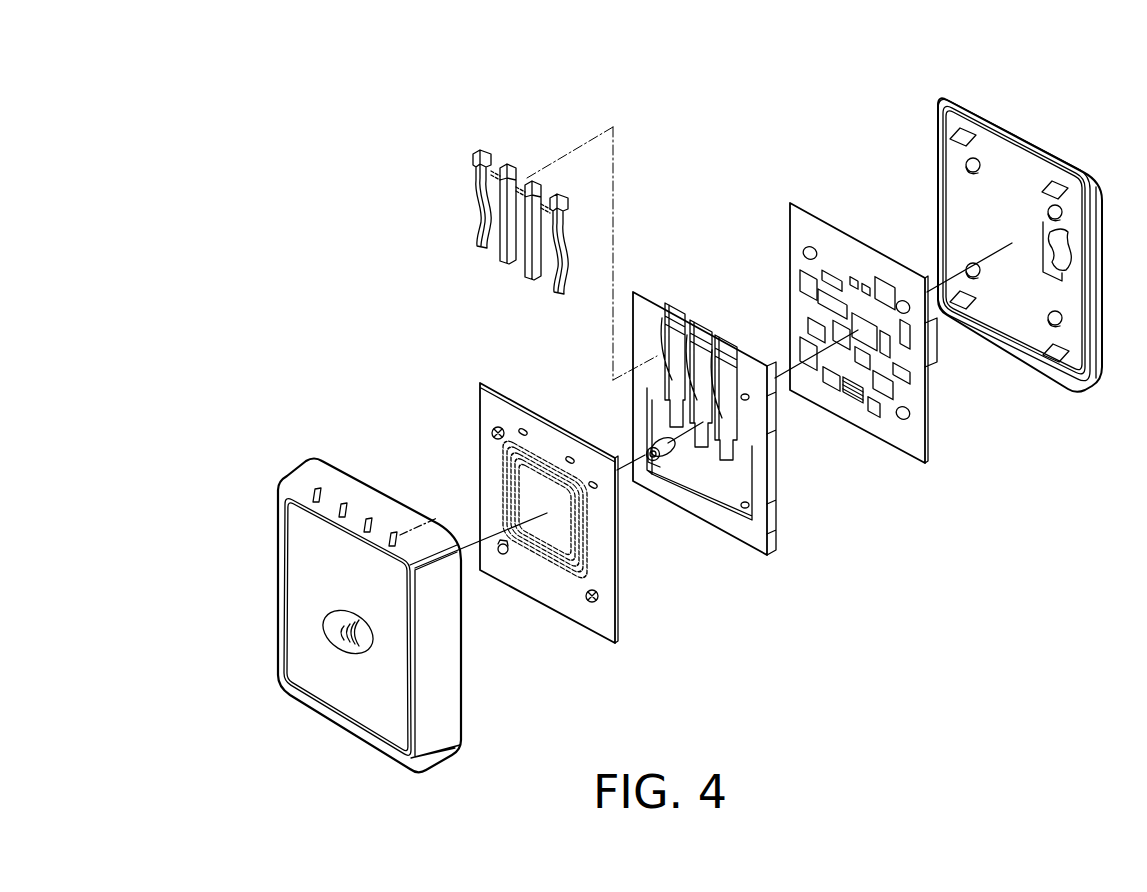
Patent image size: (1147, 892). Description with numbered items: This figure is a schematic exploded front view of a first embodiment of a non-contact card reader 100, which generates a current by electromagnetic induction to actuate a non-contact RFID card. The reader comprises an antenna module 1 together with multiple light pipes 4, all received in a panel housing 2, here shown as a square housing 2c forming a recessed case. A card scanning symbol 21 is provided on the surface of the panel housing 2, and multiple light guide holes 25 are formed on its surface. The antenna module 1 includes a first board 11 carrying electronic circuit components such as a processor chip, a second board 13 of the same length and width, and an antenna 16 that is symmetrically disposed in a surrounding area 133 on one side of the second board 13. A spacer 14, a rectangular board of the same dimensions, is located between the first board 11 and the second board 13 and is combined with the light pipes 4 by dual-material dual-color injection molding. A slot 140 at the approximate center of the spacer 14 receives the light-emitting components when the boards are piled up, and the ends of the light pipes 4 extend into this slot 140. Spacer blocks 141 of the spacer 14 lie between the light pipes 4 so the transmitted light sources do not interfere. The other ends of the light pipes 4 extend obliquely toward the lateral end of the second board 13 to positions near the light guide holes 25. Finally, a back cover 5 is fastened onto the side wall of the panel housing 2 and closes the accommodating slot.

The non-contact card reader 100 is at (178, 108).
The antenna module 1 is at (933, 519).
The panel housing 2 is at (276, 444).
The square housing 2c is at (305, 583).
The card scanning symbol 21 is at (330, 634).
The light guide holes 25 is at (393, 534).
The light pipes 4 is at (556, 271).
The back cover 5 is at (1100, 278).
The first board 11 is at (908, 448).
The second board 13 is at (603, 626).
The surrounding area 133 is at (492, 452).
The spacer 14 is at (752, 539).
The slot 140 is at (703, 464).
The spacer blocks 141 is at (727, 378).
The antenna 16 is at (537, 443).